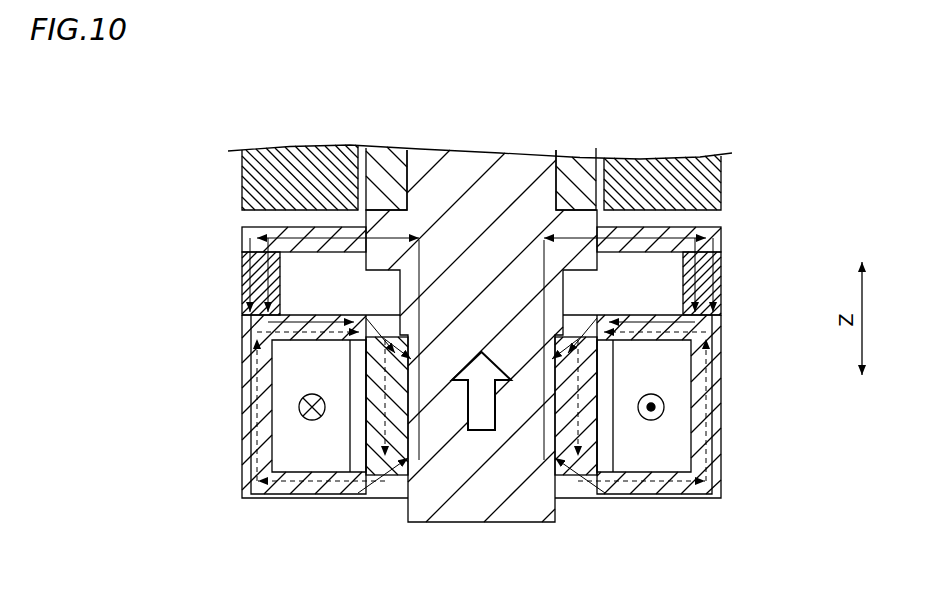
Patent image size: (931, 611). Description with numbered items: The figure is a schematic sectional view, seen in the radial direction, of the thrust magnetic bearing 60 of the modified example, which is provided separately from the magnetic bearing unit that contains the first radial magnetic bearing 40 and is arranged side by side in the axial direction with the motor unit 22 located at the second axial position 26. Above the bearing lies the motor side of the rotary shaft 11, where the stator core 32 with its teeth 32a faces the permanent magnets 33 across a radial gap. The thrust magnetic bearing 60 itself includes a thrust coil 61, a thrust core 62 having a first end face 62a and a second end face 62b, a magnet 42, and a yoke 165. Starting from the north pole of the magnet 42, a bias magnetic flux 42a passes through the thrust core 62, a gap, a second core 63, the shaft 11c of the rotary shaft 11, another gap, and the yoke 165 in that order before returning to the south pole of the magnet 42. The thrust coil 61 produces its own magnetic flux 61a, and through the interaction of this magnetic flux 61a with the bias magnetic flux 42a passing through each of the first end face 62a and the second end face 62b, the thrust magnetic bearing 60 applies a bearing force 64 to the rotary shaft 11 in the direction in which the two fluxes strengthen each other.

The rotary shaft 11 is at (483, 163).
The shaft 11c is at (481, 314).
The motor unit 22 is at (226, 152).
The second axial position 26 is at (226, 146).
The stator core 32 is at (481, 150).
The teeth 32a is at (274, 160).
The permanent magnet 33 is at (394, 192).
The first radial magnetic bearing 40 is at (218, 178).
The magnet 42 is at (242, 268).
The bias magnetic flux 42a is at (323, 322).
The thrust magnetic bearing 60 is at (234, 232).
The thrust coil 61 is at (303, 398).
The magnetic flux of the thrust coil 61a is at (380, 367).
The thrust core 62 is at (243, 426).
The first end face 62a is at (368, 324).
The second end face 62b is at (373, 498).
The second core 63 is at (412, 468).
The bearing force 64 is at (482, 431).
The yoke 165 is at (242, 240).